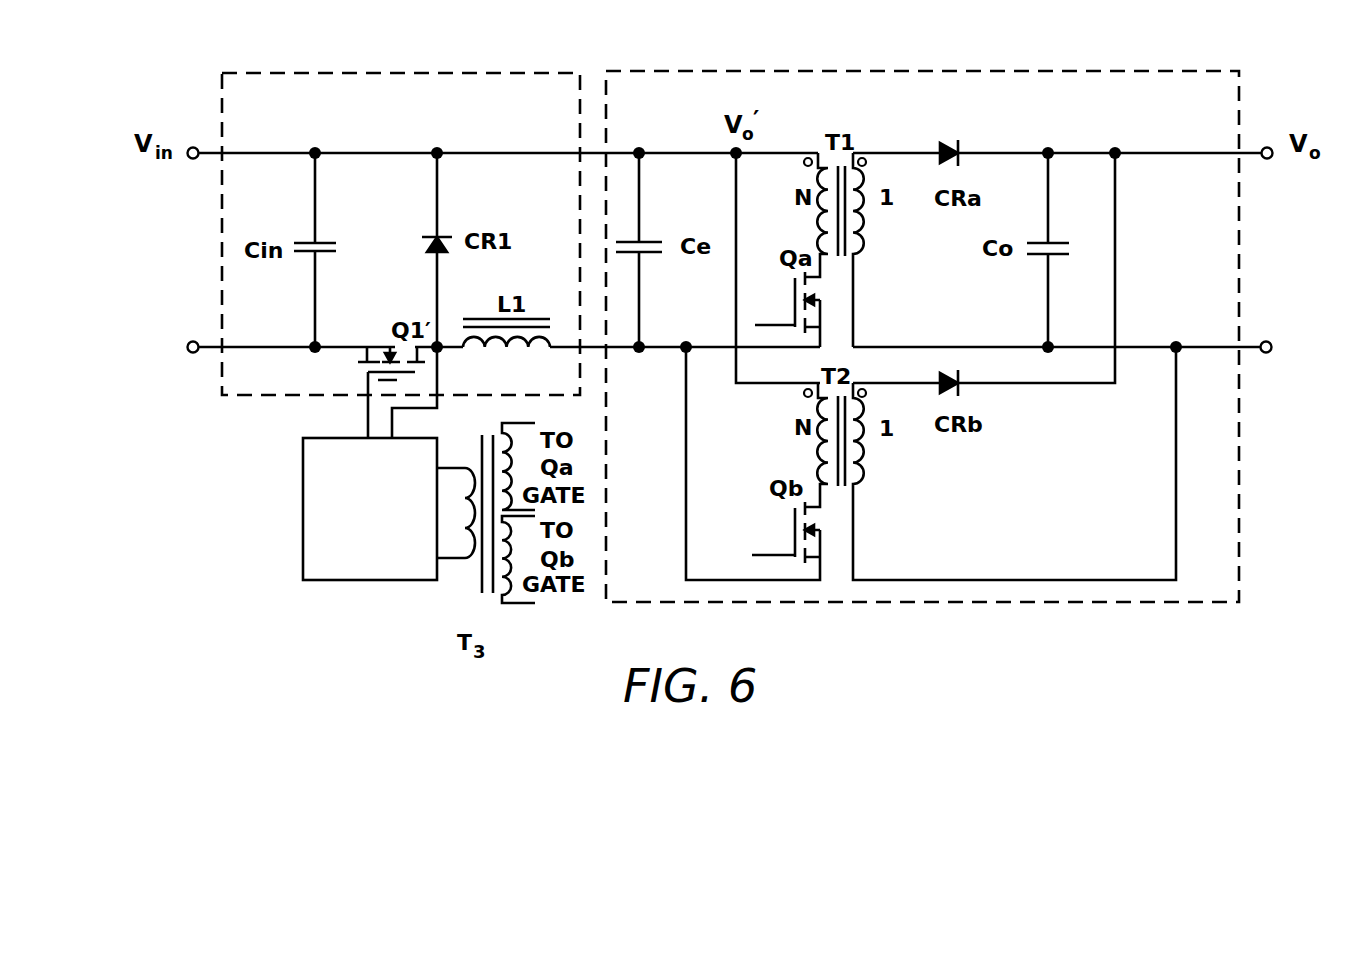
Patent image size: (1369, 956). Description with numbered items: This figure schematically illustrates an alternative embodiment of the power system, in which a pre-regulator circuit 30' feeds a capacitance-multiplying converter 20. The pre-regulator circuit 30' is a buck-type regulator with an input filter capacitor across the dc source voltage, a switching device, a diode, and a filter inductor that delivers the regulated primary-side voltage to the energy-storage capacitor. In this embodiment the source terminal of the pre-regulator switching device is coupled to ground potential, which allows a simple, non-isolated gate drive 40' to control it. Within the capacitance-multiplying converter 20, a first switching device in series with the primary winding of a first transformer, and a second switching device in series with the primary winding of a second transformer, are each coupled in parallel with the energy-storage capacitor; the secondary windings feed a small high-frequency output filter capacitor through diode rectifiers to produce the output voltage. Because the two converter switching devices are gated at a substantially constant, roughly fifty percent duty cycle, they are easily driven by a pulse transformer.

The pre-regulator circuit 30' is at (401, 207).
The gate drive 40' is at (370, 540).
The capacitance-multiplying converter 20 is at (840, 603).